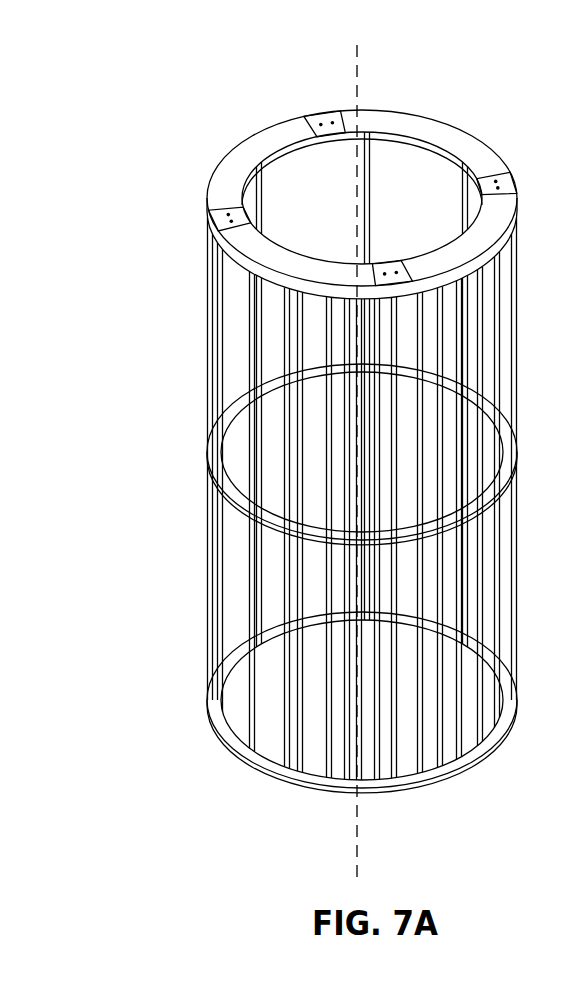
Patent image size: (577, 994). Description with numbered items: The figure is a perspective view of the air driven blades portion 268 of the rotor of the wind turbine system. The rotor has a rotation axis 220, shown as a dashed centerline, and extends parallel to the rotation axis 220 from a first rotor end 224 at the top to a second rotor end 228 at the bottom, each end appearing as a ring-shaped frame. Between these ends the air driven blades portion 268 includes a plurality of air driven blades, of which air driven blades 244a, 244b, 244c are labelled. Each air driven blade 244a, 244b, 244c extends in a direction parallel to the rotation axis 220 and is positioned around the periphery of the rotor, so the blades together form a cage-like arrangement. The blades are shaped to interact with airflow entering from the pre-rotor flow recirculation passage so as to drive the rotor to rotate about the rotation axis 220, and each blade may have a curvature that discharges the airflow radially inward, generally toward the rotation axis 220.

The air driven blades portion 268 is at (204, 56).
The rotation axis 220 is at (357, 77).
The first rotor end 224 is at (527, 243).
The second rotor end 228 is at (533, 667).
The air driven blade 244a is at (237, 315).
The air driven blade 244b is at (265, 381).
The air driven blade 244c is at (308, 451).